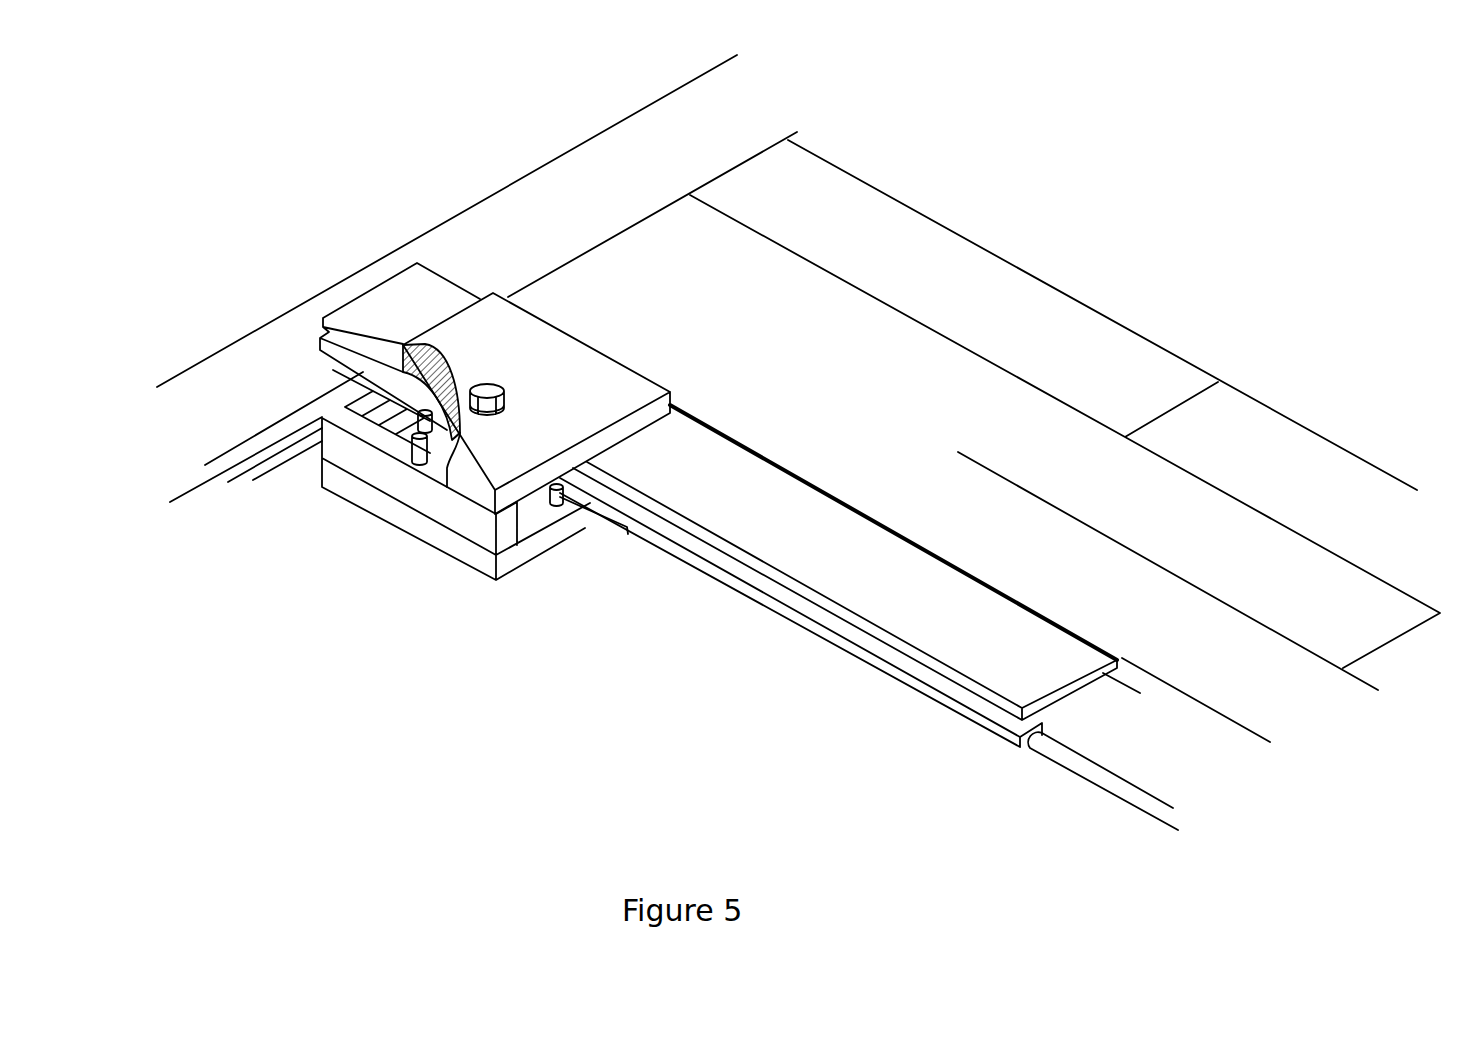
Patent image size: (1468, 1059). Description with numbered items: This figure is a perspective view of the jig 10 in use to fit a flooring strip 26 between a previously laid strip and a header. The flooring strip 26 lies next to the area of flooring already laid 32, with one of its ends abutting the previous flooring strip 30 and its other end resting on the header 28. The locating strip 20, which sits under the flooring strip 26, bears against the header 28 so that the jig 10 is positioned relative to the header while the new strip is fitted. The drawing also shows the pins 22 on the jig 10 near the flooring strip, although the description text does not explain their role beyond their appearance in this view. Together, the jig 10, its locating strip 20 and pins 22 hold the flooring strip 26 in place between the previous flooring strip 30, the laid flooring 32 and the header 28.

The jig 10 is at (522, 560).
The locating strip 20 is at (367, 387).
The pins 22 is at (417, 437).
The flooring strip 26 is at (860, 578).
The header 28 is at (528, 230).
The previous flooring strip 30 is at (1153, 745).
The area of flooring already laid 32 is at (1065, 441).